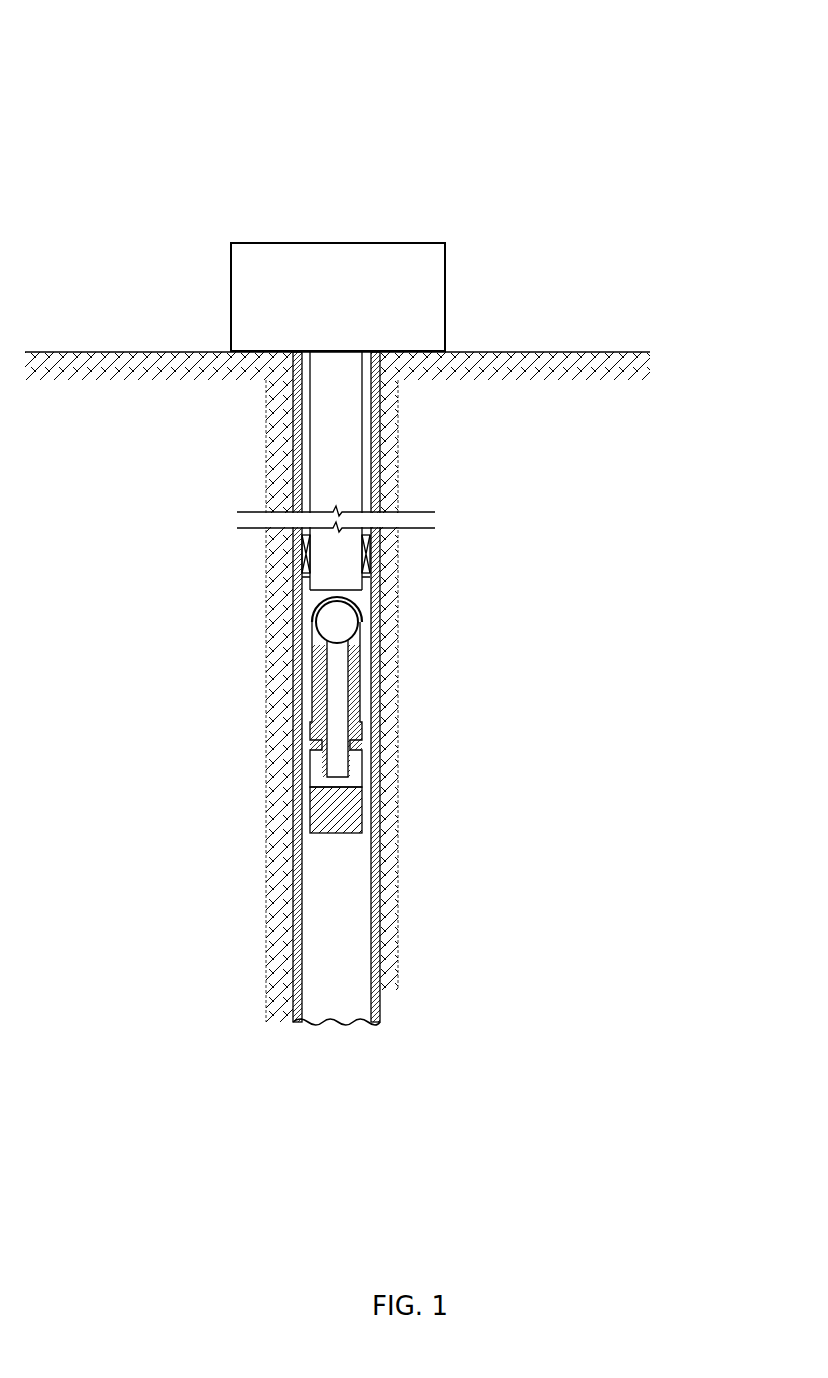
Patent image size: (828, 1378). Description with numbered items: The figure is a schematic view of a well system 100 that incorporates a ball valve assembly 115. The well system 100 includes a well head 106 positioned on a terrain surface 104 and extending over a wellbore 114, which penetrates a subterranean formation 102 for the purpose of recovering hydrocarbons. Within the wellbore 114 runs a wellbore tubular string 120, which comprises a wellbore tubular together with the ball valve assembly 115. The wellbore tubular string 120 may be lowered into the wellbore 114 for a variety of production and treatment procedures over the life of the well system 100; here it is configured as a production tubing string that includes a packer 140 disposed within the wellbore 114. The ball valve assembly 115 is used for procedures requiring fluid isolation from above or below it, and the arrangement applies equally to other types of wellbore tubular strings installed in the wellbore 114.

The well system 100 is at (433, 100).
The subterranean formation 102 is at (393, 373).
The terrain surface 104 is at (632, 352).
The well head 106 is at (364, 243).
The wellbore 114 is at (378, 488).
The ball valve assembly 115 is at (361, 628).
The wellbore tubular string 120 is at (310, 442).
The packer 140 is at (300, 552).